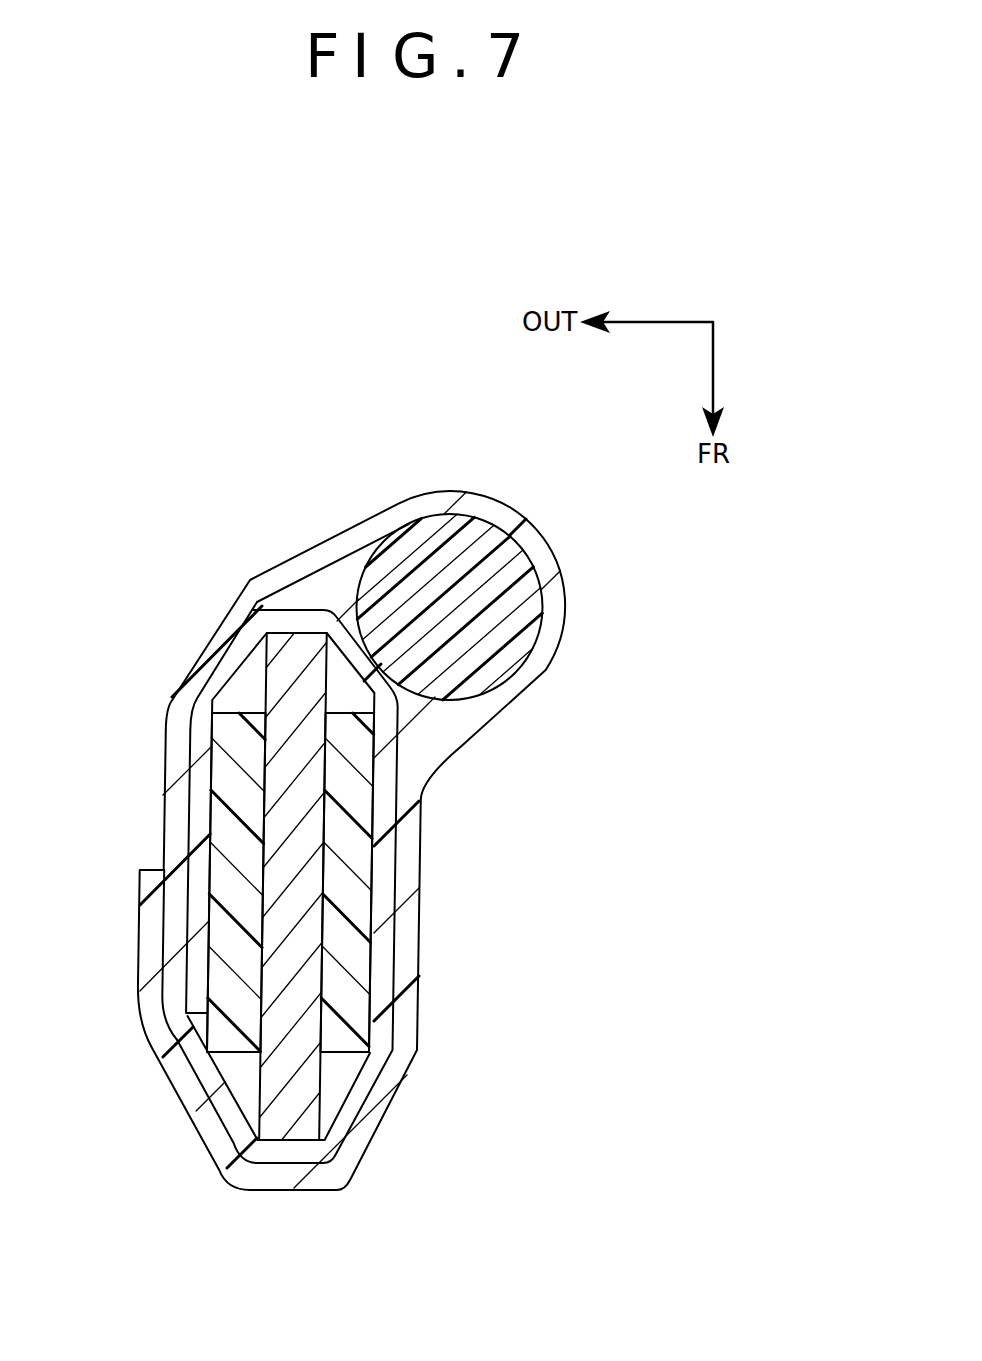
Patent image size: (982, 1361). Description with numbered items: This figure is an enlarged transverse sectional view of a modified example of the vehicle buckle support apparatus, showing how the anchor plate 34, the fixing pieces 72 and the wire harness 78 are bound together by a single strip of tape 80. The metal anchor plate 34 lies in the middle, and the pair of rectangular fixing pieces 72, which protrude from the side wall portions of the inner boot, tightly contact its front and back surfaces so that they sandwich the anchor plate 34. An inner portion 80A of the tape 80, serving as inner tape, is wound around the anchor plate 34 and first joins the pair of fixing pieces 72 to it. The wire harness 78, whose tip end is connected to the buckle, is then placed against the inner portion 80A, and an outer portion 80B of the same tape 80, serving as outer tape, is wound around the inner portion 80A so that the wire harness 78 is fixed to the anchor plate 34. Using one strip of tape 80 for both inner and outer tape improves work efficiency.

The anchor plate 34 is at (300, 748).
The fixing pieces 72 is at (237, 950).
The wire harness 78 is at (483, 580).
The single strip of tape 80 is at (420, 923).
The inner portion 80A is at (393, 875).
The outer portion 80B is at (452, 743).